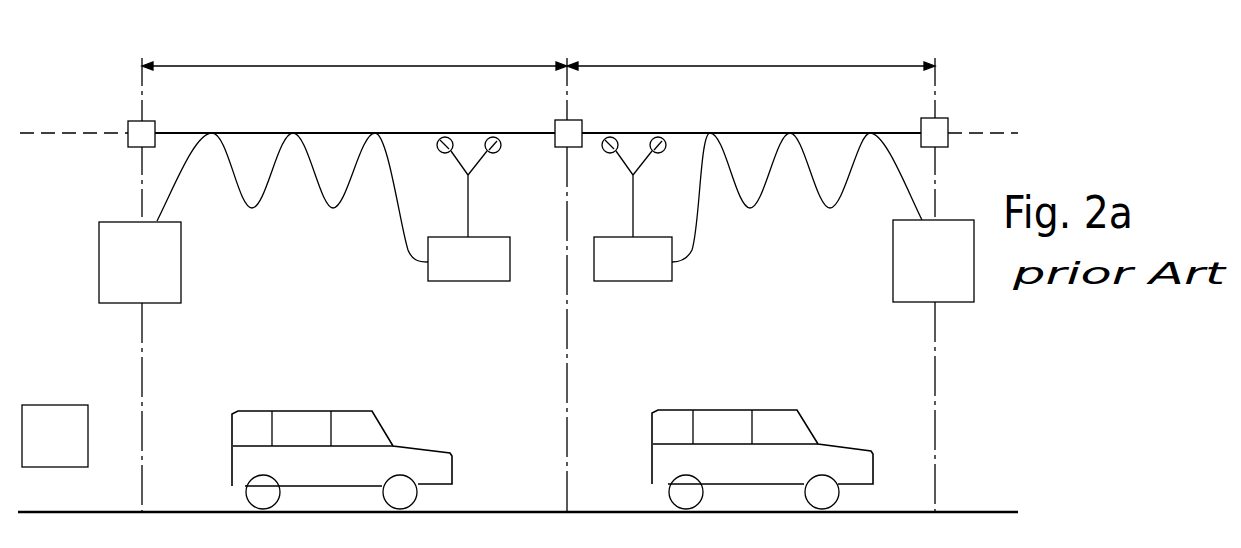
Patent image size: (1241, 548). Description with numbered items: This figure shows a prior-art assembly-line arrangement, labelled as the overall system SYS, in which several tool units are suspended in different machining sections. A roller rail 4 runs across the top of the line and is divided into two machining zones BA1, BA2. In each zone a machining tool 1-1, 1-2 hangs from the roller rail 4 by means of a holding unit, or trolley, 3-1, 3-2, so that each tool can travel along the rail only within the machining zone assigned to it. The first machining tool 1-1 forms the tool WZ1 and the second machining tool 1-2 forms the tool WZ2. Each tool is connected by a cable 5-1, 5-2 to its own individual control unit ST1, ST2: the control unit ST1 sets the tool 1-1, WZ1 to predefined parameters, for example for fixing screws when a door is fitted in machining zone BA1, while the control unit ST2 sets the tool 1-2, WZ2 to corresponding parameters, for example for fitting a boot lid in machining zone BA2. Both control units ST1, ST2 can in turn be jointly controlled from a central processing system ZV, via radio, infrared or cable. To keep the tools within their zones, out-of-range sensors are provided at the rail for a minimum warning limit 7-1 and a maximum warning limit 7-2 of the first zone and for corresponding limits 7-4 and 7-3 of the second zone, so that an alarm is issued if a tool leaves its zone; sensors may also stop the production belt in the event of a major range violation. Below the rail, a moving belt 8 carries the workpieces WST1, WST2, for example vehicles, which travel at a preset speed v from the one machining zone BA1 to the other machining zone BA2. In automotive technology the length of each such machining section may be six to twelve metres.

The system SYS is at (115, 68).
The machining zone BA1 is at (337, 66).
The machining zone BA2 is at (745, 66).
The roller rail 4 is at (405, 130).
The minimum warning limit 7-1 is at (128, 127).
The maximum warning limit 7-2 is at (555, 150).
The maximum warning limit 7-3 is at (582, 122).
The maximum warning limit 7-4 is at (942, 127).
The holding unit 3-1 is at (470, 152).
The holding unit 3-2 is at (636, 152).
The cable 5-1 is at (256, 210).
The cable 5-2 is at (755, 210).
The machining tool 1-1 is at (473, 281).
The machining tool 1-2 is at (636, 281).
The control unit ST1 is at (140, 262).
The control unit ST2 is at (933, 261).
The tool WZ1 is at (469, 259).
The tool WZ2 is at (633, 259).
The central processing system ZV is at (55, 436).
The workpiece WST1 is at (363, 411).
The workpiece WST2 is at (778, 410).
The preset speed v is at (535, 463).
The moving belt 8 is at (997, 510).